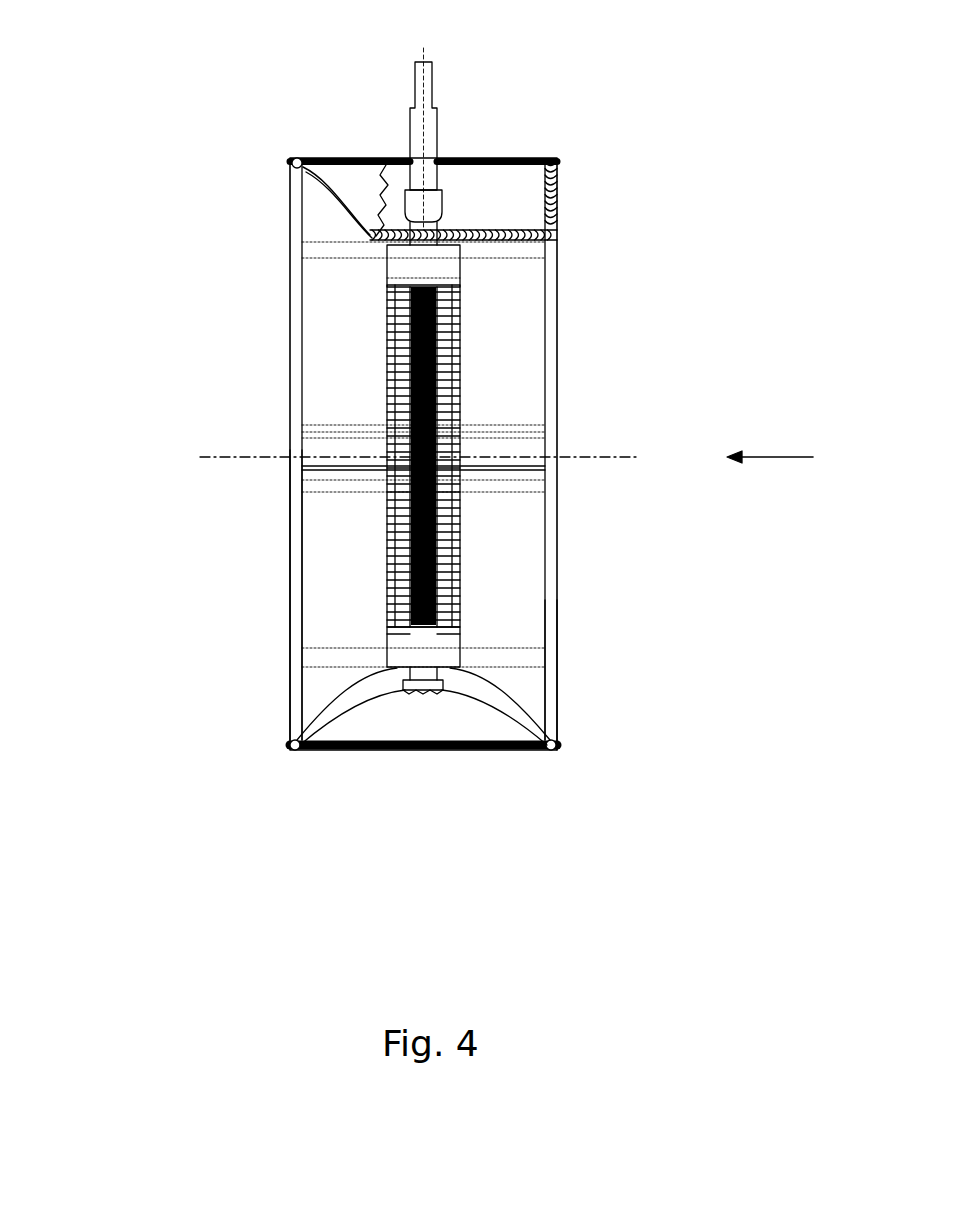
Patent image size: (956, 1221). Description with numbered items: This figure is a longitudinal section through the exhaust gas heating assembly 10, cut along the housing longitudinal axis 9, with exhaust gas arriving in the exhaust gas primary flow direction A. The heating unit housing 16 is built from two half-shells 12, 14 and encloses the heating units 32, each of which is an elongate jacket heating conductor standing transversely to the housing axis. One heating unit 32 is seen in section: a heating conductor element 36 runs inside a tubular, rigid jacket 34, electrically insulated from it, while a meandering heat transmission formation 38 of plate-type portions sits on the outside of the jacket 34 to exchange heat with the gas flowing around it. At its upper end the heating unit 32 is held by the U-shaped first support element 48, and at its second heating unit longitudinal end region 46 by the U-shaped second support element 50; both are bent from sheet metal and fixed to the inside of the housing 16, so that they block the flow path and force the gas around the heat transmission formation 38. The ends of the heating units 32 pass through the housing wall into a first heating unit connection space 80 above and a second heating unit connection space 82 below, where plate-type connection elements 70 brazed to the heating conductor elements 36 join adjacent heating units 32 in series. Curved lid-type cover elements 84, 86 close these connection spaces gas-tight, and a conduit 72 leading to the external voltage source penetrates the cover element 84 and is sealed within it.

The exhaust gas heating assembly 10 is at (177, 147).
The half-shell 12 is at (557, 280).
The half-shell 14 is at (557, 675).
The heating unit housing 16 is at (290, 578).
The conduit 72 is at (432, 200).
The first heating unit connection space 80 is at (352, 180).
The cover element 84 is at (510, 187).
The first support element 48 is at (460, 262).
The heat transmission formation 38 is at (383, 368).
The heating unit 32 is at (443, 577).
The second support element 50 is at (460, 647).
The jacket 34 is at (417, 648).
The connection element 70 is at (307, 740).
The second heating unit connection space 82 is at (367, 720).
The heating conductor element 36 is at (410, 692).
The cover element 86 is at (443, 750).
The second heating unit longitudinal end region 46 is at (453, 697).
The longitudinal axis 9 is at (610, 457).
The exhaust gas primary flow direction A is at (760, 457).